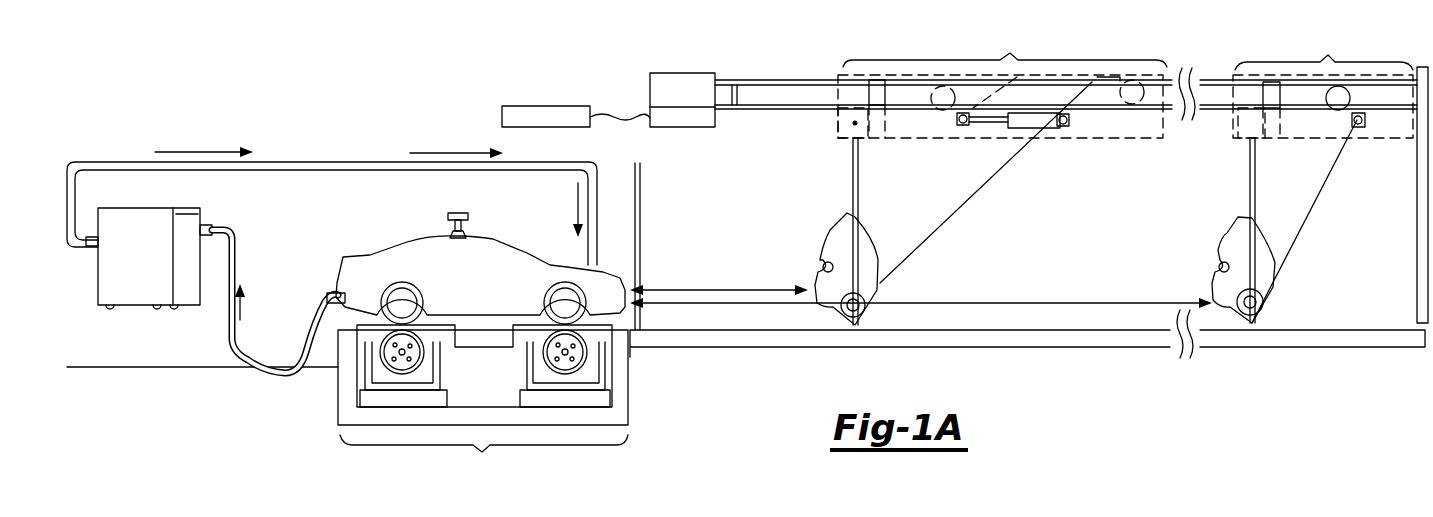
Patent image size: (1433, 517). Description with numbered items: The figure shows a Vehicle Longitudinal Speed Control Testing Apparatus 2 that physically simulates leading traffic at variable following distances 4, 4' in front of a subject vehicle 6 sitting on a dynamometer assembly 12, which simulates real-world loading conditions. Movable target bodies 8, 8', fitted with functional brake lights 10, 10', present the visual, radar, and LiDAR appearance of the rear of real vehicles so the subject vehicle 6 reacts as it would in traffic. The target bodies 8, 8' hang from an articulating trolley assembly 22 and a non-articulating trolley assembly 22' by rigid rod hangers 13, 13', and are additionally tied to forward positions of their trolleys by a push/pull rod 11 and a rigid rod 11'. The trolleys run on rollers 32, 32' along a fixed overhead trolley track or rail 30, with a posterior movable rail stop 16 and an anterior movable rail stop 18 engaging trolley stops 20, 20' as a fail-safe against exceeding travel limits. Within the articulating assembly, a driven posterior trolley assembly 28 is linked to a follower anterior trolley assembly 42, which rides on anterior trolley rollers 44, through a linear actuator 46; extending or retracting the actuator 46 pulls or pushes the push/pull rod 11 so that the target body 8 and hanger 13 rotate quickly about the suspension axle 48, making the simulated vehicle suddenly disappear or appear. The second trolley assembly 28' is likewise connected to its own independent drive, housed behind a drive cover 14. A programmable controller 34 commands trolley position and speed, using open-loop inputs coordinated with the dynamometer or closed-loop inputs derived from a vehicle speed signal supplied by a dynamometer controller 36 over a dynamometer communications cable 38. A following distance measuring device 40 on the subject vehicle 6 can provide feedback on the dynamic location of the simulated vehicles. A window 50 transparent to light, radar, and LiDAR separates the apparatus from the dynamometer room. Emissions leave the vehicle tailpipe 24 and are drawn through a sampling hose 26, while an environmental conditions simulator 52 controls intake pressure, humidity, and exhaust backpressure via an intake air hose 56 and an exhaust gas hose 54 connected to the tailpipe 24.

The Vehicle Longitudinal Speed Control Testing Apparatus (VLSCTA) 2 is at (1068, 375).
The following distance 4 is at (719, 264).
The following distance 4' is at (921, 278).
The subject vehicle 6 is at (570, 267).
The articulating target body 8 is at (833, 265).
The non-articulating target body 8' is at (1229, 263).
The brake light 10 is at (798, 259).
The brake light 10' is at (1193, 258).
The push/pull rod 11 is at (986, 182).
The rigid rod 11' is at (1312, 221).
The dynamometer assembly 12 is at (483, 405).
The rigid rod hanger 13 is at (877, 216).
The rigid rod hanger 13' is at (1277, 215).
The drive cover 14 is at (687, 85).
The posterior movable rail stop 16 is at (743, 80).
The anterior movable rail stop 18 is at (1417, 66).
The trolley stop 20 is at (923, 112).
The trolley stop 20' is at (1316, 113).
The articulating trolley assembly 22 is at (1002, 81).
The non-articulating trolley assembly 22' is at (1323, 80).
The vehicle tailpipe 24 is at (335, 288).
The sampling hose 26 is at (138, 367).
The posterior trolley assembly 28 is at (887, 132).
The trolley assembly 28' is at (1279, 133).
The trolley track or rail 30 is at (807, 93).
The roller 32 is at (970, 131).
The roller 32' is at (1385, 136).
The programmable controller 34 is at (693, 118).
The dynamometer controller 36 is at (545, 105).
The dynamometer communications cable 38 is at (620, 113).
The following distance measuring device 40 is at (460, 213).
The anterior trolley assembly 42 is at (1123, 120).
The anterior trolley roller 44 is at (1147, 110).
The linear actuator 46 is at (1018, 128).
The suspension axle 48 is at (855, 124).
The window 50 is at (642, 192).
The environmental conditions simulator 52 is at (97, 270).
The exhaust gas hose 54 is at (303, 312).
The intake air hose 56 is at (328, 162).